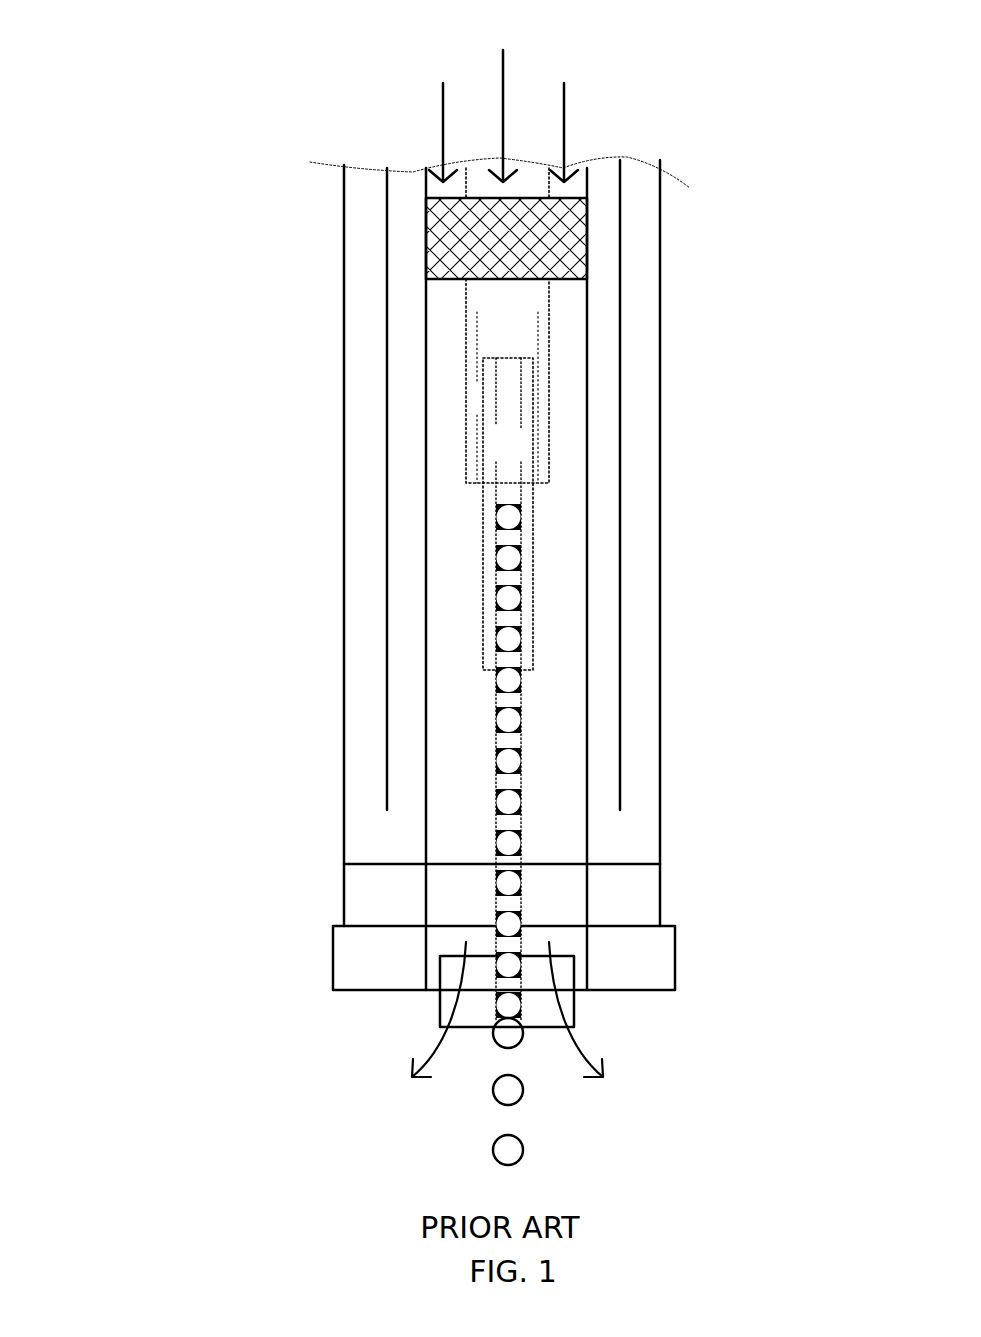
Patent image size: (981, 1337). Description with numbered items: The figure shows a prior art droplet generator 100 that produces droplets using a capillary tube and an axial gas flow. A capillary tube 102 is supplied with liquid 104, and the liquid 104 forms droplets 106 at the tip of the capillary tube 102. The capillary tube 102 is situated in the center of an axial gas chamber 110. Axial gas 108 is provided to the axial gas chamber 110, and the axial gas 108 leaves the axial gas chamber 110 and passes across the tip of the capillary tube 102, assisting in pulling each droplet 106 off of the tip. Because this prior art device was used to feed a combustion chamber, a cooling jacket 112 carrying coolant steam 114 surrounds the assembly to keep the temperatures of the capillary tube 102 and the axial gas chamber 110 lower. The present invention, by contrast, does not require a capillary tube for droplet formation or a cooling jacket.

The droplet generator 100 is at (155, 68).
The capillary tube 102 is at (497, 733).
The liquid 104 is at (503, 101).
The droplets 106 is at (523, 1148).
The axial gas 108 is at (506, 582).
The axial gas chamber 110 is at (583, 247).
The cooling jacket 112 is at (660, 593).
The coolant steam 114 is at (353, 843).